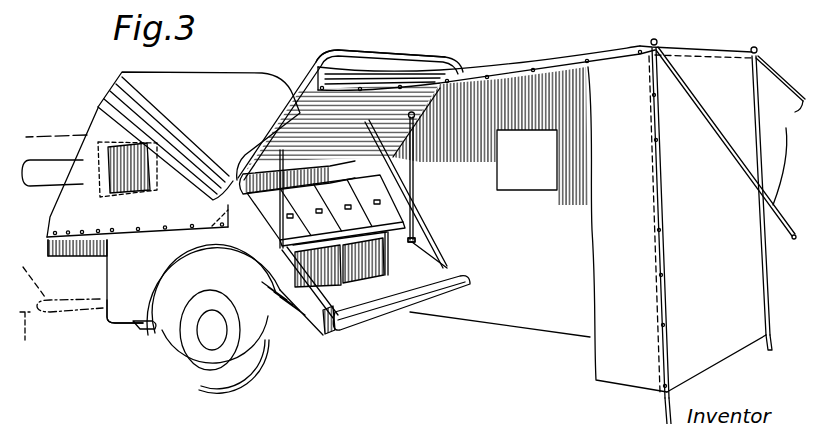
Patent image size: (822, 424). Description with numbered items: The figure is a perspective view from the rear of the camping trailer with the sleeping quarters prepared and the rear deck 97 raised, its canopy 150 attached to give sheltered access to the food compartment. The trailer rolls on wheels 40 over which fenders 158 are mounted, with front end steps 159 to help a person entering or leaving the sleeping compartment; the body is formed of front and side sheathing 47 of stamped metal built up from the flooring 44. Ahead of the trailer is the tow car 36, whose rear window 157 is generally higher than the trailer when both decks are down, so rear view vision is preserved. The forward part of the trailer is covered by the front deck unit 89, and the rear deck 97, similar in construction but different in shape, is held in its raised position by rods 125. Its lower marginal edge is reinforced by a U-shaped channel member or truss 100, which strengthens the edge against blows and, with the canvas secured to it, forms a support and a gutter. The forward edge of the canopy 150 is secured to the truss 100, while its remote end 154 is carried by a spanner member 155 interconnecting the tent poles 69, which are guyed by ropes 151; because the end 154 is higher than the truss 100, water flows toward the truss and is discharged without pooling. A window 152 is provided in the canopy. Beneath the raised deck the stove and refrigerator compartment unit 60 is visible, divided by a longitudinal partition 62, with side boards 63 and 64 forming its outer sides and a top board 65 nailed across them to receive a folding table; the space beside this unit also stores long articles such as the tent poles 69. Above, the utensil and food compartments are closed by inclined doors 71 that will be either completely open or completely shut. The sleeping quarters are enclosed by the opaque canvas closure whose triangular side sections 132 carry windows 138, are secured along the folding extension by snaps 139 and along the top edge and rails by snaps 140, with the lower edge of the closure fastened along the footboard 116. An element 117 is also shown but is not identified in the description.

The tow car 36 is at (61, 312).
The wheels 40 is at (187, 363).
The flooring 44 is at (372, 292).
The front and side sheathing 47 is at (137, 297).
The stove and refrigerator compartment unit 60 is at (422, 245).
The longitudinally disposed partition 62 is at (318, 266).
The side board 63 is at (288, 260).
The side board 64 is at (365, 257).
The top board 65 is at (388, 238).
The tent poles 69 is at (760, 347).
The door 71 is at (353, 193).
The deck unit 89 is at (210, 88).
The rear deck 97 is at (348, 51).
The U-shaped channel member 100 is at (402, 65).
The footboard 116 is at (53, 252).
The step 117 is at (80, 257).
The rods 125 is at (267, 147).
The triangular side sections 132 is at (80, 198).
The windows 138 is at (100, 143).
The snaps 139 is at (110, 247).
The snaps 140 is at (163, 231).
The canopy 150 is at (513, 70).
The ropes 151 is at (785, 148).
The window 152 is at (520, 173).
The other end of canvas roofing 154 is at (688, 63).
The spanner member 155 is at (722, 53).
The rear window 157 is at (43, 165).
The fenders 158 is at (280, 330).
The front end steps 159 is at (137, 330).